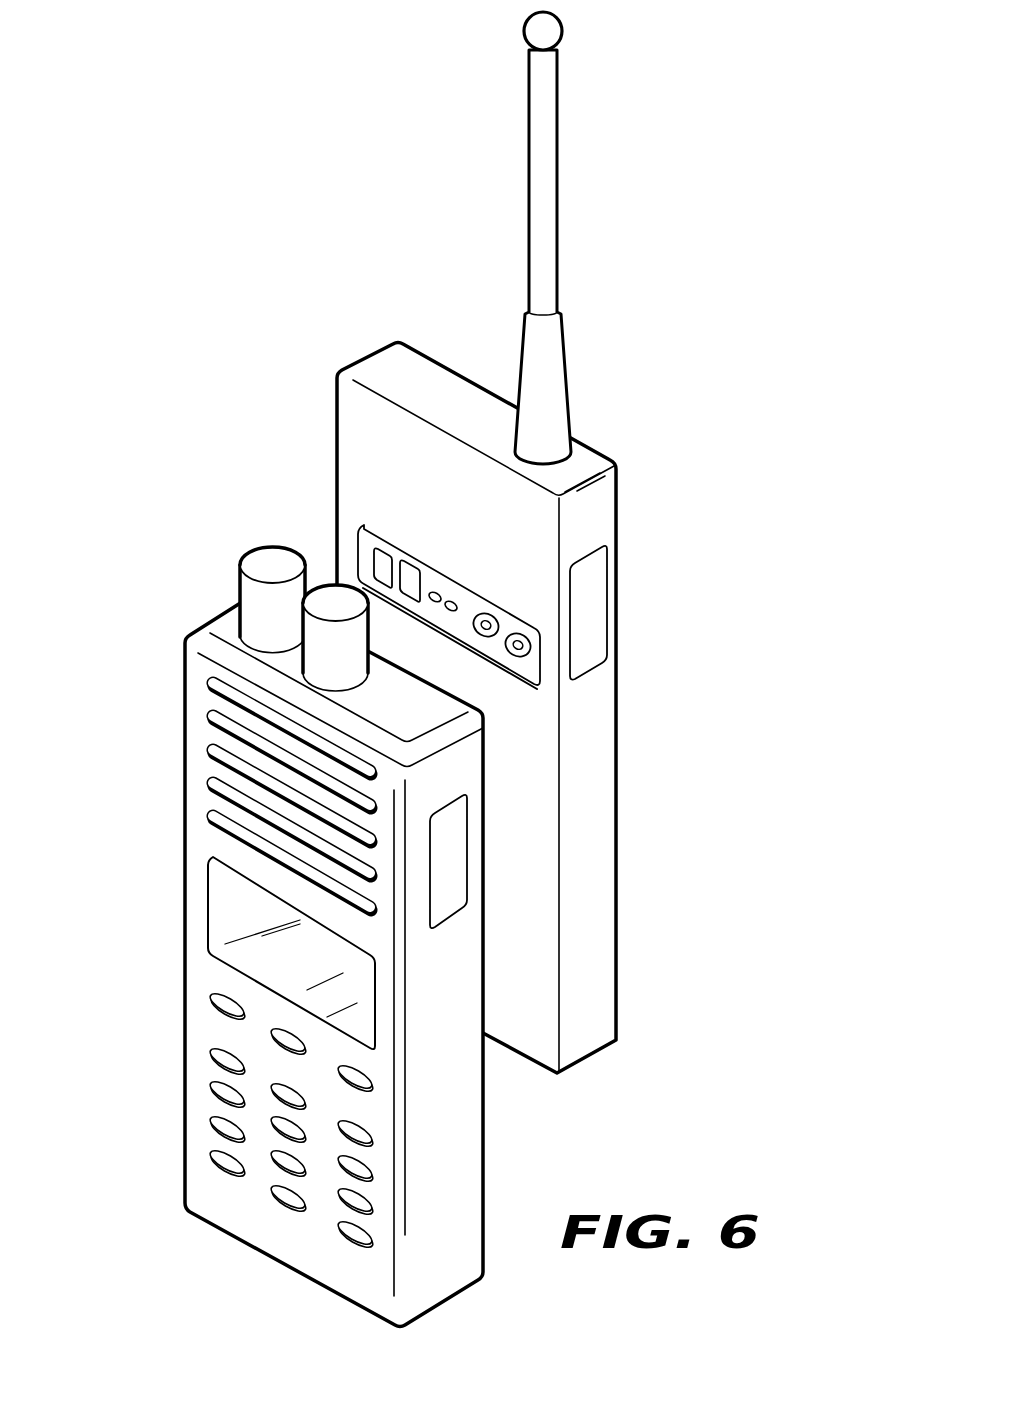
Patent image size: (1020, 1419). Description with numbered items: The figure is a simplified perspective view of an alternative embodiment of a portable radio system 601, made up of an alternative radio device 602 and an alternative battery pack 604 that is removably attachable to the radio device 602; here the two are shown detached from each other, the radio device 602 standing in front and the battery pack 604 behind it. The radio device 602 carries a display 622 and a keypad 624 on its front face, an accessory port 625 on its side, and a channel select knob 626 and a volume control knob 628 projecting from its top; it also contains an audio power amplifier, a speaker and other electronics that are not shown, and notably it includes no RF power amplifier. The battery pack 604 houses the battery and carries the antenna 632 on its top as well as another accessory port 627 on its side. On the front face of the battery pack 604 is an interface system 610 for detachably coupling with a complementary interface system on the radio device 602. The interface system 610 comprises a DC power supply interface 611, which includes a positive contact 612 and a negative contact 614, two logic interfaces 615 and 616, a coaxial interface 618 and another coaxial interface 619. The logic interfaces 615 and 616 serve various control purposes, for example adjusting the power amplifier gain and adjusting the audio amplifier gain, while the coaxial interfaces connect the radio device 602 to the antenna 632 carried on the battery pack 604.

The portable radio system 601 is at (674, 1175).
The radio device 602 is at (183, 898).
The battery pack 604 is at (617, 815).
The interface system 610 is at (455, 525).
The DC power supply interface 611 is at (413, 558).
The positive contact 612 is at (383, 546).
The negative contact 614 is at (397, 515).
The logic interface 615 is at (440, 593).
The logic interface 616 is at (453, 604).
The coaxial interface 618 is at (497, 617).
The other coaxial interface 619 is at (528, 640).
The display 622 is at (237, 967).
The keypad 624 is at (267, 1087).
The accessory port 625 is at (455, 893).
The channel select knob 626 is at (328, 583).
The other accessory port 627 is at (587, 648).
The volume control knob 628 is at (241, 548).
The antenna 632 is at (558, 135).